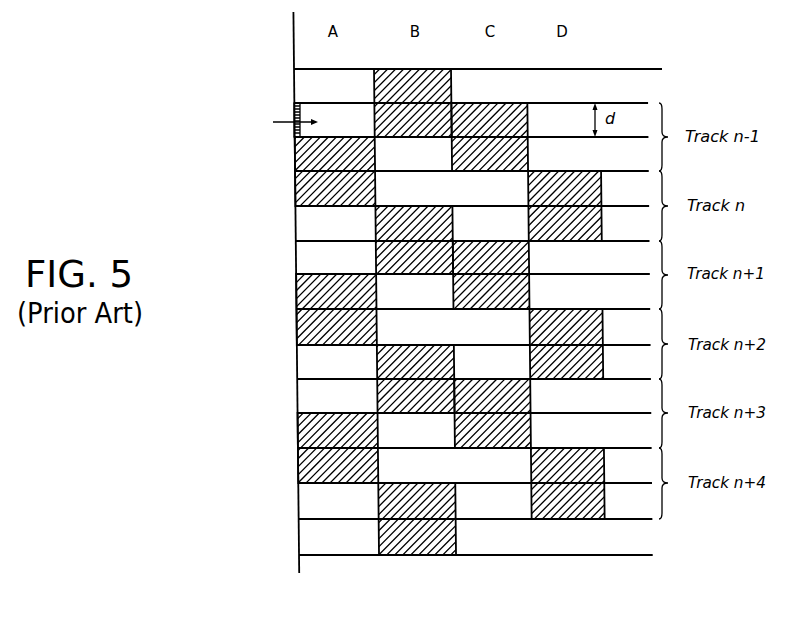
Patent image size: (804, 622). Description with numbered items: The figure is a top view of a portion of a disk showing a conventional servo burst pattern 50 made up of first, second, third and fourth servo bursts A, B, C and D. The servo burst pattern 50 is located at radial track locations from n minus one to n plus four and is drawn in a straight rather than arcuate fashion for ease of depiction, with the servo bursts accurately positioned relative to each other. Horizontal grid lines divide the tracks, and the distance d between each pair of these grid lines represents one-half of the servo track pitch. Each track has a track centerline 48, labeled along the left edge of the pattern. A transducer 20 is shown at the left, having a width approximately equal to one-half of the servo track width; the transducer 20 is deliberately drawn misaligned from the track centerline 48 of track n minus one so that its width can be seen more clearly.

The transducer 20 is at (294, 110).
The track centerline 48 is at (236, 504).
The servo burst pattern 50 is at (603, 78).